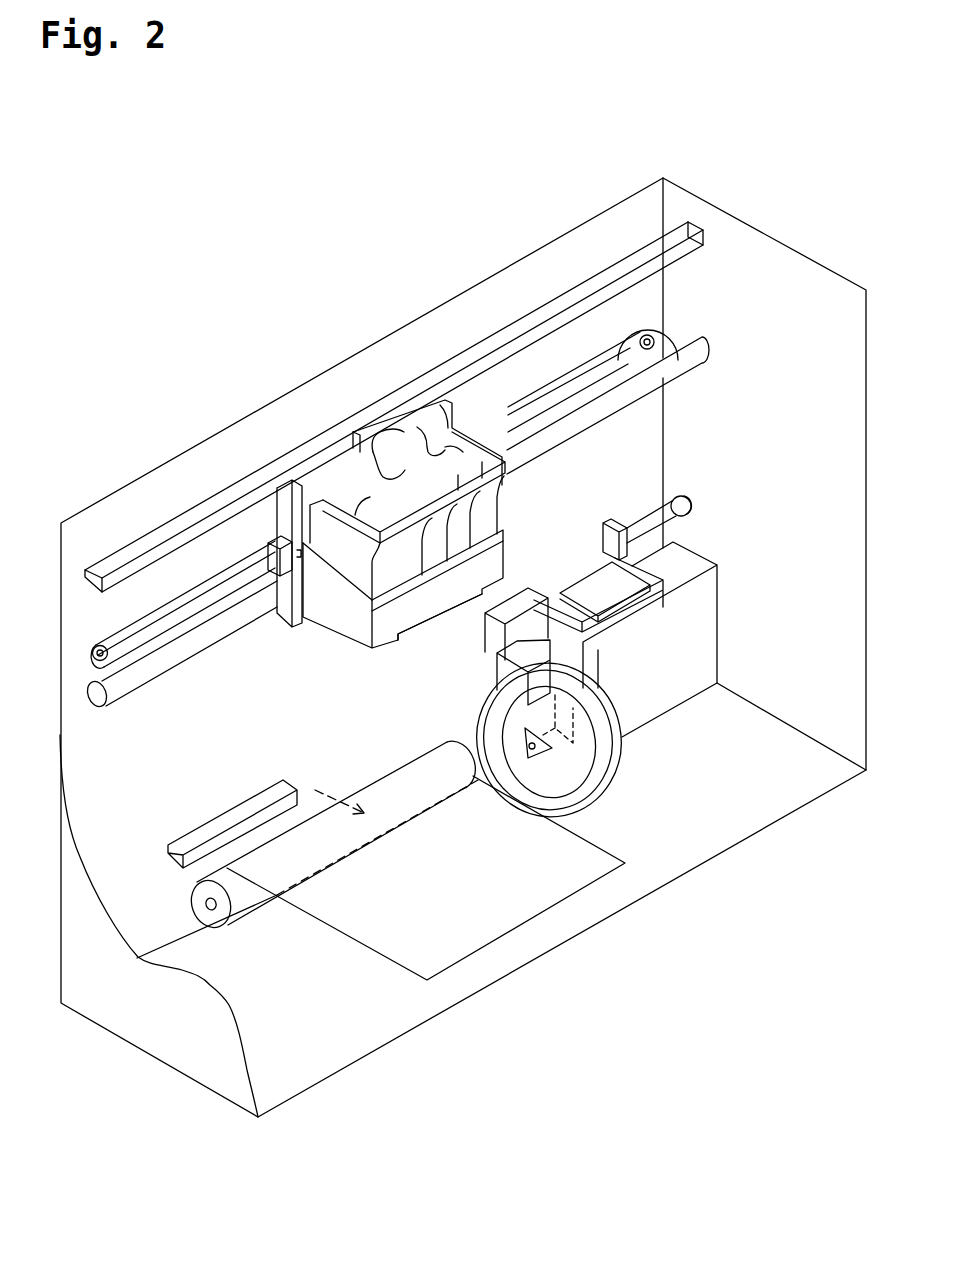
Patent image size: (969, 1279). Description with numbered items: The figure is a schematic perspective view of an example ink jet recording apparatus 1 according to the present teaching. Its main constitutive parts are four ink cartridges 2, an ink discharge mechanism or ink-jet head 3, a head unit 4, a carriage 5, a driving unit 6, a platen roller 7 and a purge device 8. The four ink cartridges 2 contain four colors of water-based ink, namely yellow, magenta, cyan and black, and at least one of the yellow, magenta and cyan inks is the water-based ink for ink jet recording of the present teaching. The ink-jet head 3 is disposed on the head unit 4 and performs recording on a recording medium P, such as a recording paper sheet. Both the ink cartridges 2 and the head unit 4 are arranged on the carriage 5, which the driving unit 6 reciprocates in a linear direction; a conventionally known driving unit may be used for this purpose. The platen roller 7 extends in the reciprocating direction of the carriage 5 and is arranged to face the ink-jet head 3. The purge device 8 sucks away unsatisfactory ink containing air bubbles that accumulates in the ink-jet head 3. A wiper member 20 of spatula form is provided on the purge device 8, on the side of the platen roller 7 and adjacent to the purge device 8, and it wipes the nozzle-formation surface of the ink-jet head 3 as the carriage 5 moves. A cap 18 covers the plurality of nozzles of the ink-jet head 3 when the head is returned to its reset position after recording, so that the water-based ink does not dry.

The ink jet recording apparatus 1 is at (360, 199).
The ink cartridges 2 is at (405, 467).
The ink-jet head 3 is at (445, 617).
The head unit 4 is at (427, 659).
The carriage 5 is at (288, 503).
The driving unit 6 is at (688, 207).
The platen roller 7 is at (247, 895).
The purge device 8 is at (620, 853).
The cap 18 is at (693, 558).
The wiper member 20 is at (522, 655).
The recording medium P is at (417, 952).